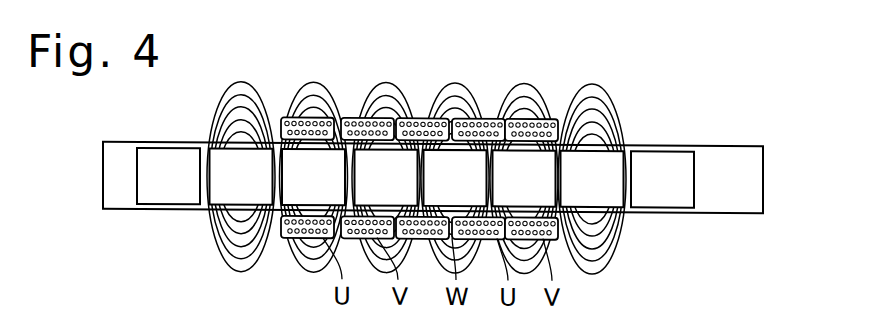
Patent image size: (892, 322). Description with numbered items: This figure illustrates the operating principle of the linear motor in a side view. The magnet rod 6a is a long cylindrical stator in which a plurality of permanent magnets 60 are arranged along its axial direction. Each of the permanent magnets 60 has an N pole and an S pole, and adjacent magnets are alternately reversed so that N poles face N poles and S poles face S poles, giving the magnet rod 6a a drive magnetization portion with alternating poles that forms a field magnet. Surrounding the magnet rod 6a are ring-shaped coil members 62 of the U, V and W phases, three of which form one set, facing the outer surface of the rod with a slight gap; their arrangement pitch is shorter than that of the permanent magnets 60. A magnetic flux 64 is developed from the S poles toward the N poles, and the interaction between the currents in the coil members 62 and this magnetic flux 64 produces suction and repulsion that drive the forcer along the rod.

The permanent magnet 60 is at (170, 206).
The coil member 62 is at (415, 104).
The magnetic flux 64 is at (620, 100).
The magnet rod 6a is at (717, 152).